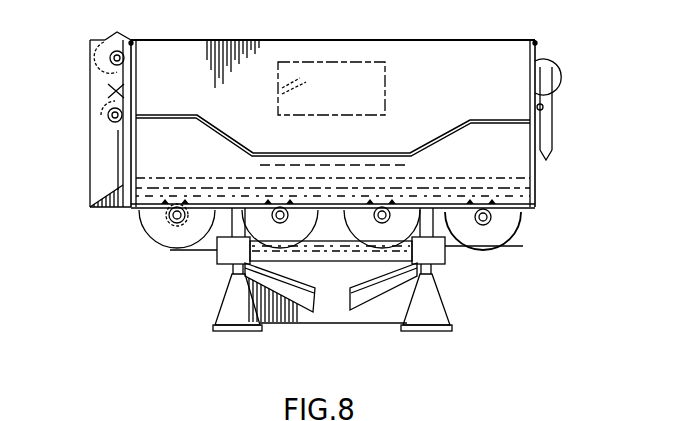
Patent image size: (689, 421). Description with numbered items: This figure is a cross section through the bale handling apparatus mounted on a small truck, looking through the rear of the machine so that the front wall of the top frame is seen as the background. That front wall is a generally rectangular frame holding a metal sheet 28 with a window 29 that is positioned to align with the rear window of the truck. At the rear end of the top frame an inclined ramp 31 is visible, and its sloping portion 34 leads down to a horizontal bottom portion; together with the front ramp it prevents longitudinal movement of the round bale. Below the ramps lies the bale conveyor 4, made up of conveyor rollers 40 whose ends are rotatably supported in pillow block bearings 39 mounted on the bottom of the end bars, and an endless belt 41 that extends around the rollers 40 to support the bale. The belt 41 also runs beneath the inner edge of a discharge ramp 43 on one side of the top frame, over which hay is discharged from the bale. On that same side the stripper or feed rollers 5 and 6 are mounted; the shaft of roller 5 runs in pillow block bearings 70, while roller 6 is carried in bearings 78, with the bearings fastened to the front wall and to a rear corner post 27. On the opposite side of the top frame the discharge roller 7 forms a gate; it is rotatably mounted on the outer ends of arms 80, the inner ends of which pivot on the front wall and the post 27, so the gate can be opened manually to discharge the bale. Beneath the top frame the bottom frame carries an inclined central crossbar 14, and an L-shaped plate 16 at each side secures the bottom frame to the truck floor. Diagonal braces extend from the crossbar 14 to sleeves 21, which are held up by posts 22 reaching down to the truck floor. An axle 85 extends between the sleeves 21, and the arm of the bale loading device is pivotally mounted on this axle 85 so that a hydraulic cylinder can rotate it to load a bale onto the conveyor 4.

The bale conveyor 4 is at (505, 248).
The stripper or feed roller 5 is at (107, 50).
The stripper or feed roller 6 is at (105, 128).
The discharge roller 7 is at (560, 73).
The inclined central crossbar 14 is at (335, 322).
The L-shaped plate 16 is at (238, 312).
The sleeve 21 is at (222, 258).
The post 22 is at (234, 271).
The rear corner post 27 is at (132, 42).
The metal sheet 28 is at (448, 99).
The window 29 is at (354, 101).
The inclined ramp 31 is at (230, 132).
The sloping portion 34 is at (353, 163).
The pillow block bearing 39 is at (177, 220).
The conveyor roller 40 is at (150, 225).
The endless belt 41 is at (169, 252).
The discharge ramp 43 is at (100, 196).
The pillow block bearing 70 is at (112, 59).
The bearing 78 is at (110, 116).
The arm 80 is at (548, 125).
The axle 85 is at (322, 275).